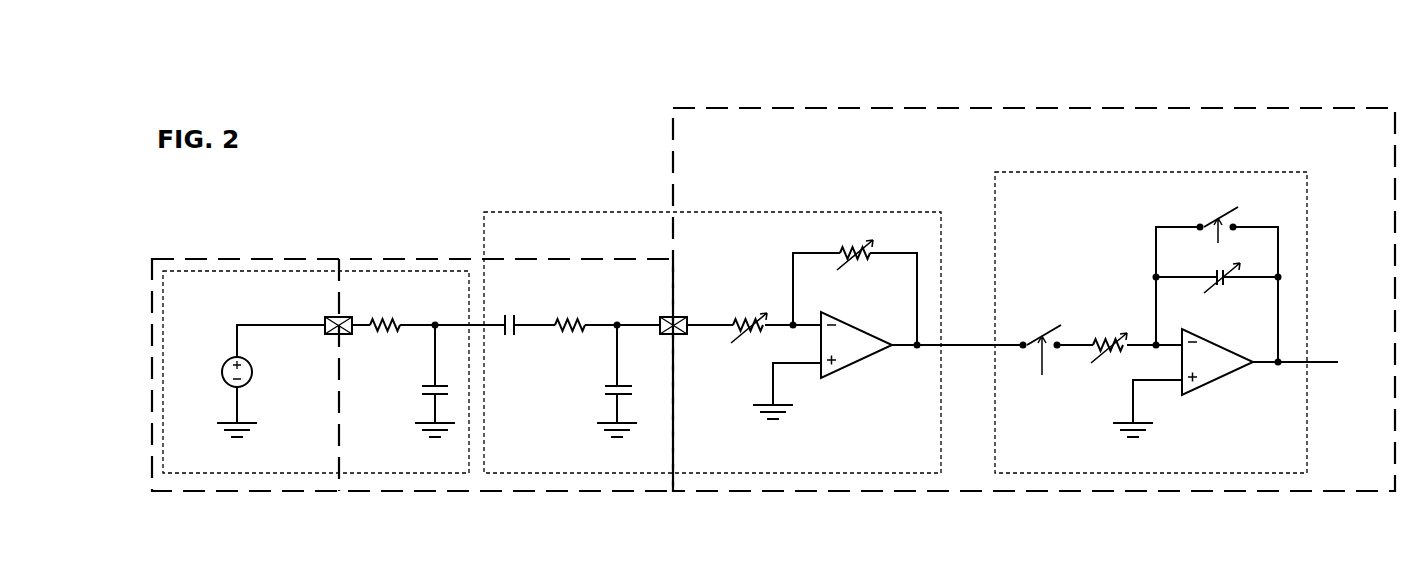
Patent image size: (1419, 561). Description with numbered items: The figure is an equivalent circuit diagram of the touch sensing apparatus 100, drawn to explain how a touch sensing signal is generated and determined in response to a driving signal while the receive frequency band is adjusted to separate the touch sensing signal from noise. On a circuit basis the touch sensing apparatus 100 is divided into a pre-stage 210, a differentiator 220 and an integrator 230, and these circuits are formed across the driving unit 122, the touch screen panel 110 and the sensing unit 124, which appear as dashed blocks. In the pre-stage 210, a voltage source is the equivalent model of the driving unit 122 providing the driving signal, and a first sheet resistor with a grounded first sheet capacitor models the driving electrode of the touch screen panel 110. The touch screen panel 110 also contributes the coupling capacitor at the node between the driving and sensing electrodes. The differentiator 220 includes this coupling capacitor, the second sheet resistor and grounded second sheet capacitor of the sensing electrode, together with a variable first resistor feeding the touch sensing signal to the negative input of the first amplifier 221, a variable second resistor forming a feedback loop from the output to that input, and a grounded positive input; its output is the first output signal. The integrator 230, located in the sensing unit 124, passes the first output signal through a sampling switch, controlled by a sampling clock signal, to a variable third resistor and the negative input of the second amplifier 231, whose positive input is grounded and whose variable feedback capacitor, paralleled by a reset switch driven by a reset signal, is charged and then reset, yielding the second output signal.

The touch sensing apparatus 100 is at (790, 70).
The touch screen panel 110 is at (490, 492).
The driving unit 122 is at (263, 492).
The sensing unit 124 is at (825, 492).
The pre-stage 210 is at (300, 270).
The differentiator 220 is at (712, 212).
The first amplifier 221 is at (856, 327).
The integrator 230 is at (1225, 172).
The second amplifier 231 is at (1221, 347).